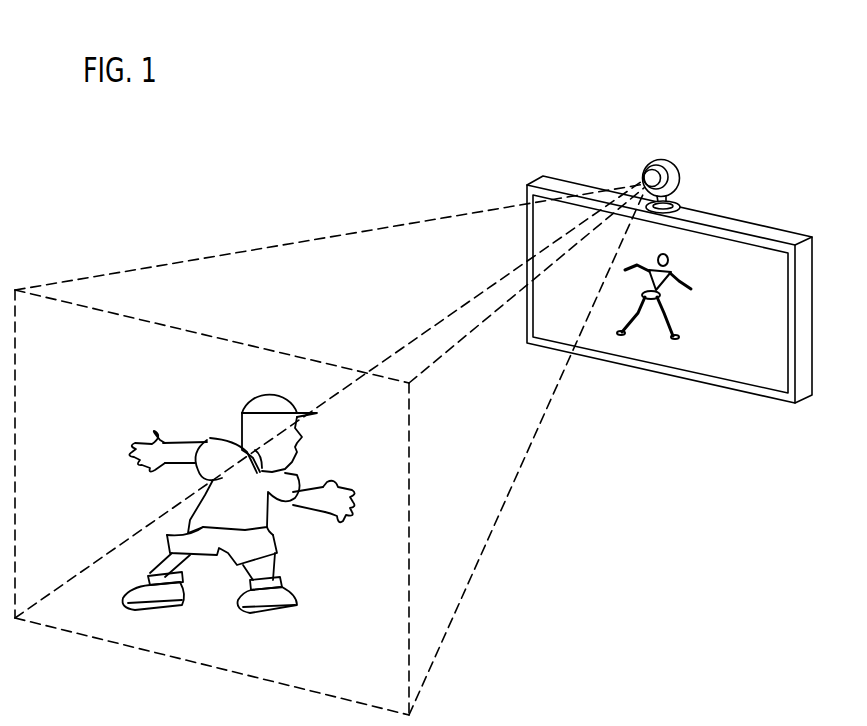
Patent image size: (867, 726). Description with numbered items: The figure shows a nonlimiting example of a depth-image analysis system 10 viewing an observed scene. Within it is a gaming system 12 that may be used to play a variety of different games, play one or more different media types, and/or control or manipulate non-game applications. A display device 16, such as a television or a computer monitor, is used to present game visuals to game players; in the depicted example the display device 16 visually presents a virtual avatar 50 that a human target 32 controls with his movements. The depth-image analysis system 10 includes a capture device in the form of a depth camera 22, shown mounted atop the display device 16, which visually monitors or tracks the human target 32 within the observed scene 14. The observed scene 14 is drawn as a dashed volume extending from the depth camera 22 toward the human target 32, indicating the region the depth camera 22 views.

The depth-image analysis system 10 is at (395, 58).
The gaming system 12 is at (460, 140).
The observed scene 14 is at (76, 360).
The display device 16 is at (756, 353).
The depth camera 22 is at (677, 166).
The human target 32 is at (246, 516).
The virtual avatar 50 is at (670, 258).